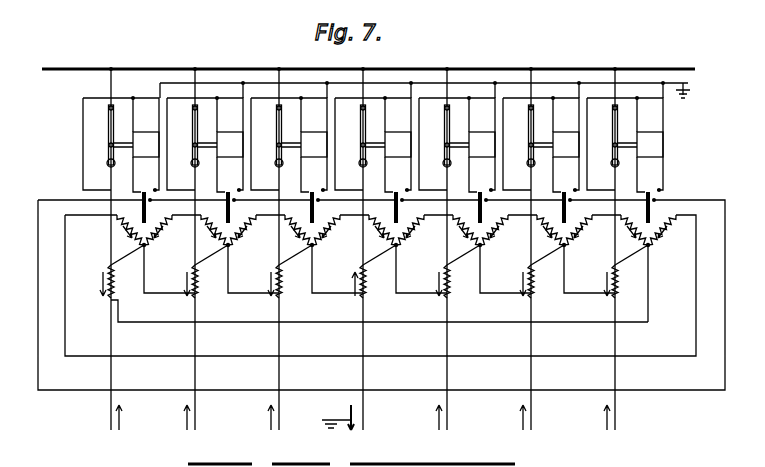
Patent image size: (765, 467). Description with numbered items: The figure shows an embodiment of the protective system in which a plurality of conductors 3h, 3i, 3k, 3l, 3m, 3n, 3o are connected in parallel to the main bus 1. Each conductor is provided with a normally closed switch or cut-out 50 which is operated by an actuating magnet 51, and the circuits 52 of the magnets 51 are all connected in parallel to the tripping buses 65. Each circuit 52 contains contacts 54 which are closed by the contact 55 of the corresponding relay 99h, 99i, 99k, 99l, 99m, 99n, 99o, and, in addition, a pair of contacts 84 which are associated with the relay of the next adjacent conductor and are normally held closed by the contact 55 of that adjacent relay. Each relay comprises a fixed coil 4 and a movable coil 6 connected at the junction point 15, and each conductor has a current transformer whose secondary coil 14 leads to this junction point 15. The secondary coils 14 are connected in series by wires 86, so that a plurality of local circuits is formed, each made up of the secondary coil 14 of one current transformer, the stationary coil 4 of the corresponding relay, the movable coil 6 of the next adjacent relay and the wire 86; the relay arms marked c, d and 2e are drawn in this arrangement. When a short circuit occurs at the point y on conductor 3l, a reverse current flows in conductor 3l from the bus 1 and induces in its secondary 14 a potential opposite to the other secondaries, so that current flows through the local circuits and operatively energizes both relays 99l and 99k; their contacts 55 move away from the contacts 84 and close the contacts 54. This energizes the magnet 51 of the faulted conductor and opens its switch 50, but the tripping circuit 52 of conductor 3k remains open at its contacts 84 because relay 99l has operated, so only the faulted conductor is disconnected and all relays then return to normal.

The main bus 1 is at (231, 68).
The tripping buses 65 is at (565, 98).
The switch or cut-out 50 is at (108, 127).
The actuating magnet 51 is at (146, 128).
The magnet circuit 52 is at (640, 158).
The relay contact 55 is at (145, 192).
The contacts 54 is at (156, 189).
The additional pair of contacts 84 is at (140, 202).
The relay 99h is at (147, 223).
The relay 99i is at (229, 223).
The relay 99k is at (315, 223).
The relay 99l is at (397, 223).
The relay 99m is at (485, 223).
The relay 99n is at (567, 223).
The relay 99o is at (651, 223).
The fixed coil 4 is at (126, 221).
The resistance arm c is at (130, 232).
The resistance arm d is at (214, 232).
The resistance arm 2e is at (213, 230).
The movable coil 6 is at (219, 226).
The junction point 15 is at (147, 247).
The secondary coil 14 is at (115, 285).
The wires 86 is at (163, 296).
The conductor 3h is at (108, 412).
The conductor 3i is at (193, 412).
The conductor 3k is at (277, 412).
The conductor 3l is at (363, 412).
The conductor 3m is at (445, 412).
The conductor 3n is at (529, 412).
The conductor 3o is at (613, 412).
The short-circuit point y is at (352, 420).